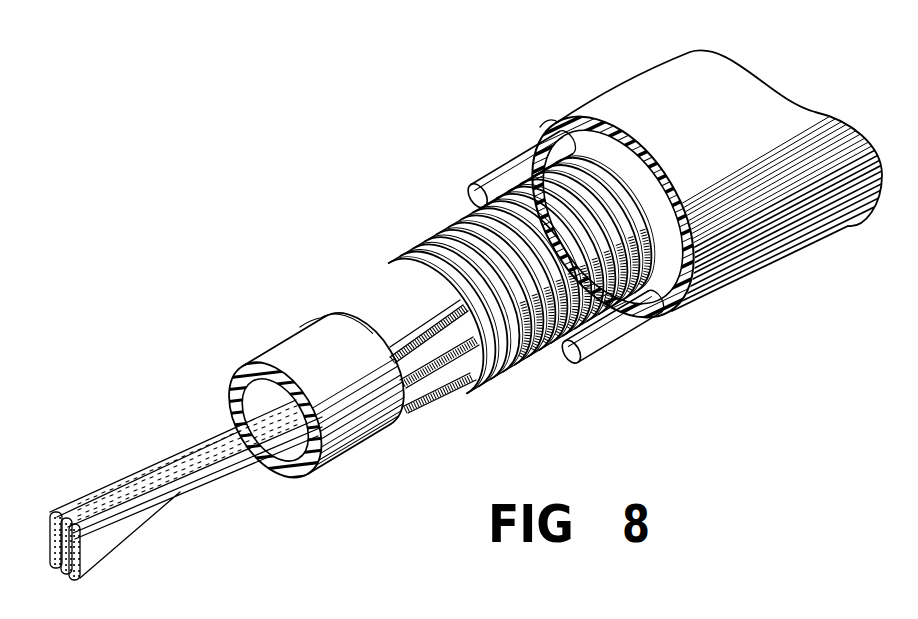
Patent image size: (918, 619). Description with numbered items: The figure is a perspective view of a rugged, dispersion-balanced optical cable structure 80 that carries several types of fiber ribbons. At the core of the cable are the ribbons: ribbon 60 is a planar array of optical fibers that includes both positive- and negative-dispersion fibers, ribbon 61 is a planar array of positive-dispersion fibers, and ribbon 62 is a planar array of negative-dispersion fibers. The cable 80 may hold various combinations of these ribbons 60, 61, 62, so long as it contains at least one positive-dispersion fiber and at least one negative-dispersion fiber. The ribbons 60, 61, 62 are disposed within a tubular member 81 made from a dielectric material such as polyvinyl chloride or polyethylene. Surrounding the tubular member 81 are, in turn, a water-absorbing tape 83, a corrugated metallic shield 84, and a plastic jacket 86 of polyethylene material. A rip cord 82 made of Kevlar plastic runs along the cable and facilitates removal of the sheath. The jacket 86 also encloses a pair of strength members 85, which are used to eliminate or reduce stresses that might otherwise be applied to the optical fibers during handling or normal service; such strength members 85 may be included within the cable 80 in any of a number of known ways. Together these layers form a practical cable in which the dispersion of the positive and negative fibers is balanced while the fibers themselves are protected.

The optical cable structure 80 is at (652, 60).
The tubular member 81 is at (240, 392).
The rip cord 82 is at (300, 323).
The water-absorbing tape 83 is at (377, 287).
The corrugated metallic shield 84 is at (452, 237).
The strength members 85 is at (507, 170).
The plastic jacket 86 is at (546, 124).
The ribbon 60 is at (97, 490).
The ribbon 61 is at (140, 490).
The ribbon 62 is at (183, 487).